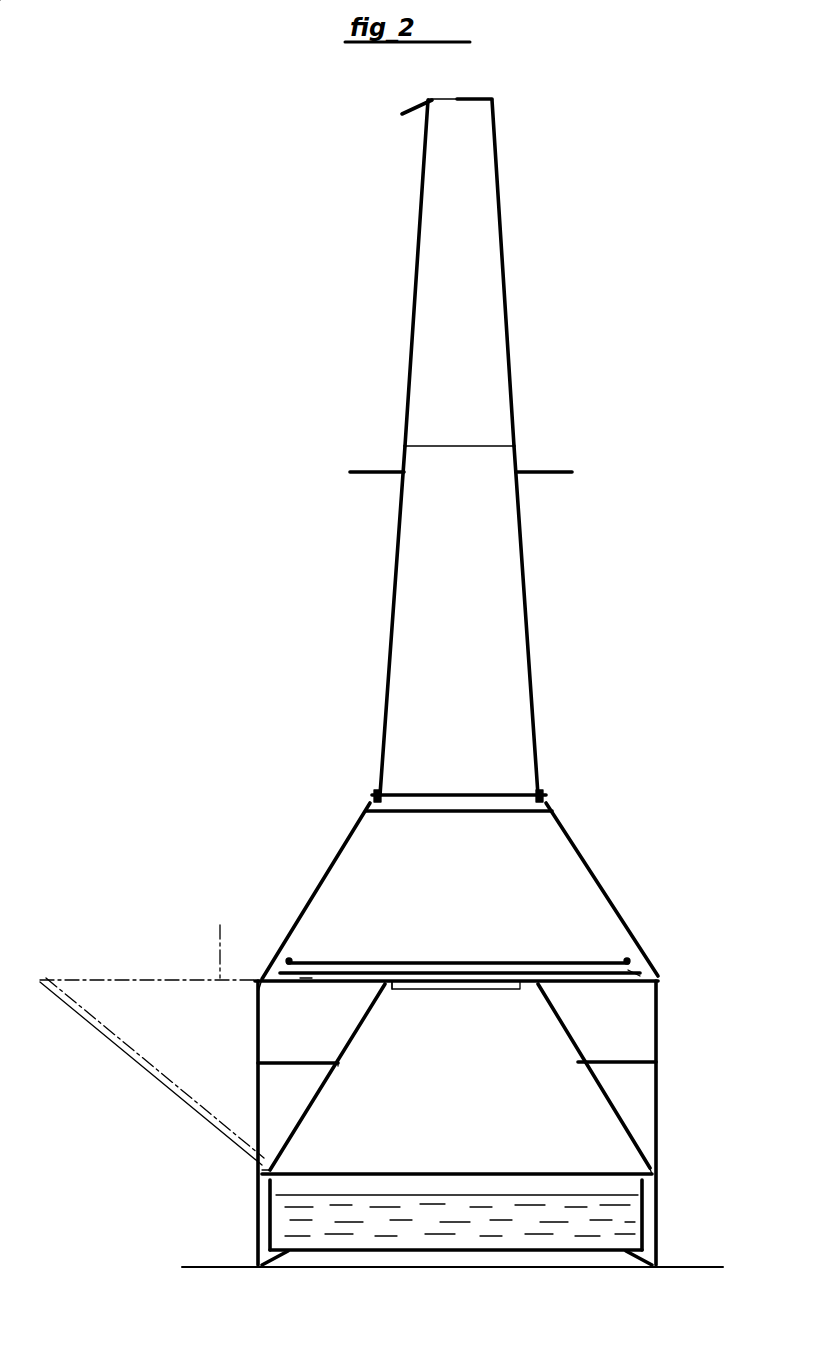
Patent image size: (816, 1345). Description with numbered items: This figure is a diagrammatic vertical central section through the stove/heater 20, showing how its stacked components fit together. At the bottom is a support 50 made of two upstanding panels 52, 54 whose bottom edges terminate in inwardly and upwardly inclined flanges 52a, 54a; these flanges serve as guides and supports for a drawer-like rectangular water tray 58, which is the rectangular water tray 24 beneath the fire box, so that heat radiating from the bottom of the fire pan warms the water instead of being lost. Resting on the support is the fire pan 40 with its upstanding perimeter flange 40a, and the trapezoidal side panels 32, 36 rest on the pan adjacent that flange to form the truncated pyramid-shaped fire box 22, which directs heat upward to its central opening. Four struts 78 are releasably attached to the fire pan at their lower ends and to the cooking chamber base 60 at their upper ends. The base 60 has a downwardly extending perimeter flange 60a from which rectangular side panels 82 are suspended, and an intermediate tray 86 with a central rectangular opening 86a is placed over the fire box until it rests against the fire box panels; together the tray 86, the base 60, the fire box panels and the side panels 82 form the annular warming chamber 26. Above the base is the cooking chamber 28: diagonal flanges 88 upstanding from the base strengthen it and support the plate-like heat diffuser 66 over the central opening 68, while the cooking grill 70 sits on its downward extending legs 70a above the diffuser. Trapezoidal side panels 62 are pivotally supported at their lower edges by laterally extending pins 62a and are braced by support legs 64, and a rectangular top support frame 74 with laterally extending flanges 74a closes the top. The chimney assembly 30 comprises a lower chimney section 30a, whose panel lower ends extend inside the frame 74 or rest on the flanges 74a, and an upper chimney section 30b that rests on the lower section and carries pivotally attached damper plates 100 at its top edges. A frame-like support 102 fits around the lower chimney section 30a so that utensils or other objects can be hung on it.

The stove/heater 20 is at (234, 258).
The fire box 22 is at (580, 1130).
The water tray 24 is at (506, 1230).
The annular warming chamber 26 is at (465, 1114).
The cooking chamber 28 is at (426, 889).
The chimney assembly 30 is at (524, 447).
The lower chimney section 30a is at (538, 646).
The upper chimney section 30b is at (502, 258).
The side panel 32 is at (316, 1106).
The side panel 36 is at (566, 1042).
The fire pan 40 is at (440, 1172).
The upstanding flange 40a is at (658, 1172).
The support 50 is at (468, 1243).
The upstanding panel 52 is at (256, 1212).
The inclined flange 52a is at (278, 1270).
The upstanding panel 54 is at (662, 1196).
The inclined flange 54a is at (640, 1270).
The water tray 58 is at (454, 1262).
The base 60 is at (548, 990).
The downwardly extending flange 60a is at (660, 982).
The side panel 62 is at (296, 908).
The pin 62a is at (262, 982).
The support leg 64 is at (122, 1070).
The heat diffuser 66 is at (447, 960).
The central opening 68 is at (514, 990).
The cooking grill 70 is at (394, 970).
The leg 70a is at (632, 968).
The top support frame 74 is at (457, 805).
The flange 74a is at (368, 797).
The strut 78 is at (256, 1082).
The side panel 82 is at (256, 1046).
The intermediate tray 86 is at (302, 1060).
The central rectangular opening 86a is at (342, 1063).
The diagonal flange 88 is at (336, 962).
The damper plate 100 is at (480, 97).
The frame-like support 102 is at (558, 470).